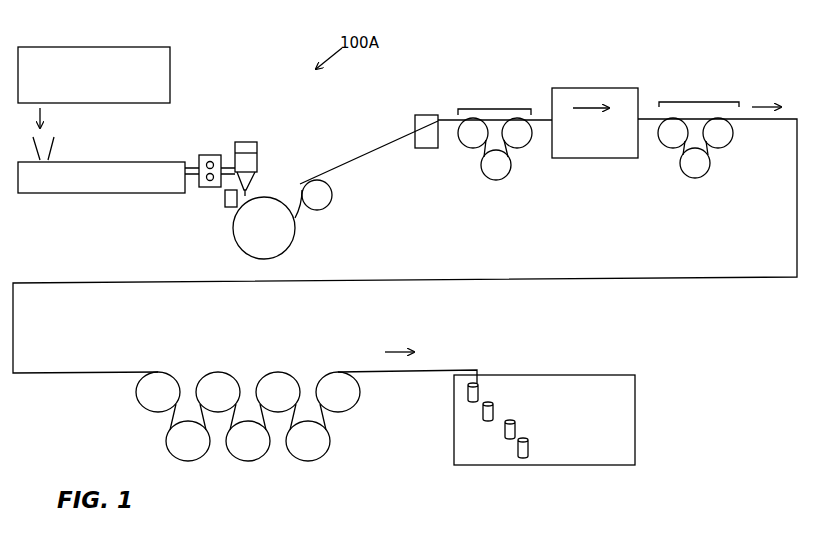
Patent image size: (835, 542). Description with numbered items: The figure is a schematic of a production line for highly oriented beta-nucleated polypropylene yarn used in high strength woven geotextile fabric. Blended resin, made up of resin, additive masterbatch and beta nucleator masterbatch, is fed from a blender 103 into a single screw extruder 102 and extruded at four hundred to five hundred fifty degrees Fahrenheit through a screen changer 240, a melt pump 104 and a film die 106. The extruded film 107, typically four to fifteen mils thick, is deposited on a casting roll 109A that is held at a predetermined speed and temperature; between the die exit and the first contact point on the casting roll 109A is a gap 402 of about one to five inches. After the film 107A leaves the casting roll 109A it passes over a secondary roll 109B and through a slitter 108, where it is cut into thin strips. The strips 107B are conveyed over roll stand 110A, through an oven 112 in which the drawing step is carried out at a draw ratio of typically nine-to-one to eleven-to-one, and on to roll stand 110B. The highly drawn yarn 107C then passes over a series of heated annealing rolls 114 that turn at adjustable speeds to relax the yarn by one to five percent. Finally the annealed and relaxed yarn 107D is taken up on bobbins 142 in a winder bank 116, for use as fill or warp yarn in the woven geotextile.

The blender 103 is at (82, 47).
The single screw extruder 102 is at (96, 162).
The screen changer 240 is at (205, 155).
The melt pump 104 is at (244, 142).
The film die 106 is at (258, 165).
The gap 402 is at (225, 200).
The casting roll 109A is at (232, 248).
The extruded film 107 is at (243, 200).
The secondary roll 109B is at (317, 210).
The film 107A is at (363, 158).
The slitter 108 is at (420, 115).
The strips 107B is at (443, 122).
The roll stand 110A is at (515, 66).
The oven 112 is at (570, 159).
The roll stand 110B is at (690, 65).
The highly drawn yarn 107C is at (789, 230).
The annealing rolls 114 is at (250, 482).
The annealed and relaxed yarn 107D is at (403, 381).
The winder bank 116 is at (573, 375).
The bobbins 142 is at (528, 448).